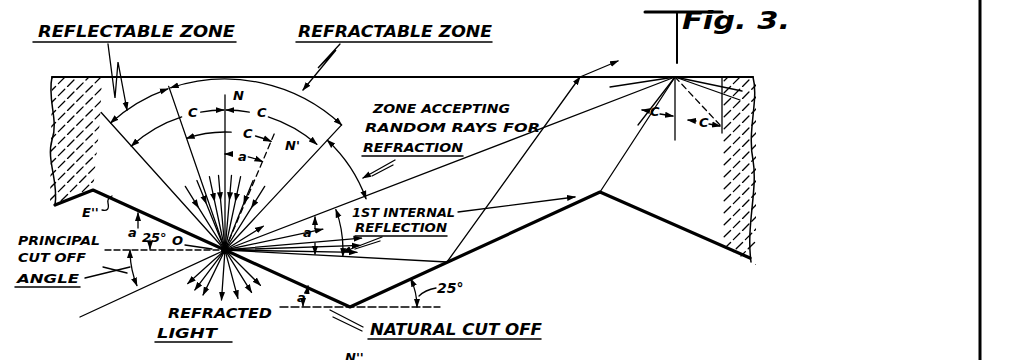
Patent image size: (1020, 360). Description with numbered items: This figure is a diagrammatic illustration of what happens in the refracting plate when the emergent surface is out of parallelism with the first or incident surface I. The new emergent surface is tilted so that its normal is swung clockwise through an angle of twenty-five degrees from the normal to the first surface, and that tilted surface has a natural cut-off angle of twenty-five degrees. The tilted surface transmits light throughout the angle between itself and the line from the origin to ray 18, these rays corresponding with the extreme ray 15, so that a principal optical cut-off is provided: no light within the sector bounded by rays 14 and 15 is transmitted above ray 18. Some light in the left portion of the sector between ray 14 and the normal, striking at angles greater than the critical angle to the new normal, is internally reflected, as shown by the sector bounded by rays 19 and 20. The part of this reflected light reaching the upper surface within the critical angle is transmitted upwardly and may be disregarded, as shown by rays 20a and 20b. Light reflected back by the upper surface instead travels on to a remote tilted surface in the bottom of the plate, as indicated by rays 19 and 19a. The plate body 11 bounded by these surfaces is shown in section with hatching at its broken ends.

The prism refractor 11 is at (196, 8).
The extreme ray of sector 14 is at (149, 182).
The extreme ray 15 is at (347, 122).
The principal cut-off ray 18 is at (118, 301).
The internally reflected ray 19 is at (462, 162).
The ray to remote tilted surface 19a is at (740, 100).
The internally reflected ray 20 is at (376, 259).
The ray within critical angle 20a is at (528, 150).
The transmitted ray 20b is at (595, 66).
The incident surface I is at (531, 77).